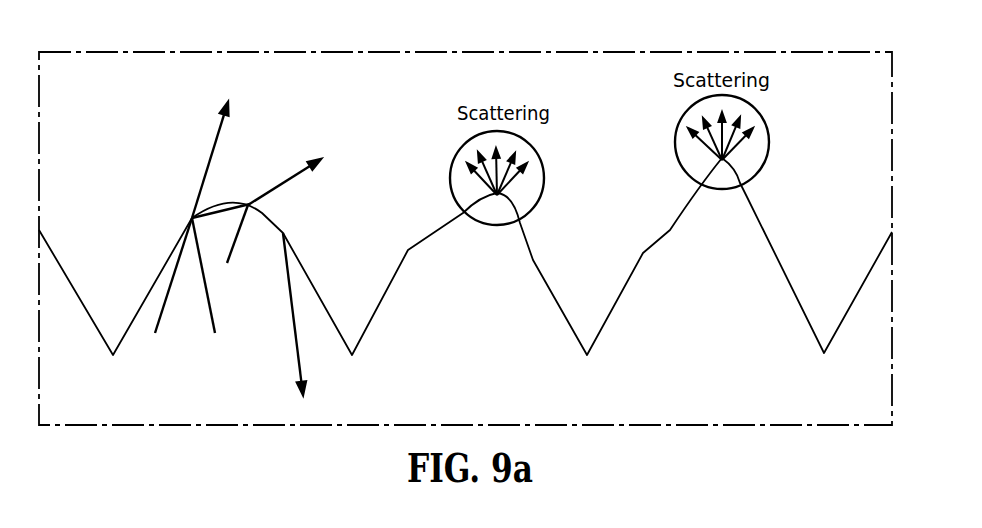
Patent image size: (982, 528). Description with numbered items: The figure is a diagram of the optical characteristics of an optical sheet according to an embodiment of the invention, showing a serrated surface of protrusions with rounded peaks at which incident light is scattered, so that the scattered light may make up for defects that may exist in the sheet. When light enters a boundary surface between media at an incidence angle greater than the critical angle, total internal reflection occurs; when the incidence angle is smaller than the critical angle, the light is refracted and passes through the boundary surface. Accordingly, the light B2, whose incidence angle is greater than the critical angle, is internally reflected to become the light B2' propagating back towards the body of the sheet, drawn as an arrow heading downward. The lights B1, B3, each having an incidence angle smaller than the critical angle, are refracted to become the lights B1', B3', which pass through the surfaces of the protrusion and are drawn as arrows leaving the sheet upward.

The light B1 is at (231, 275).
The light B1' is at (193, 159).
The light B2 is at (202, 296).
The light B2' is at (271, 323).
The light B3 is at (251, 242).
The light B3' is at (284, 165).